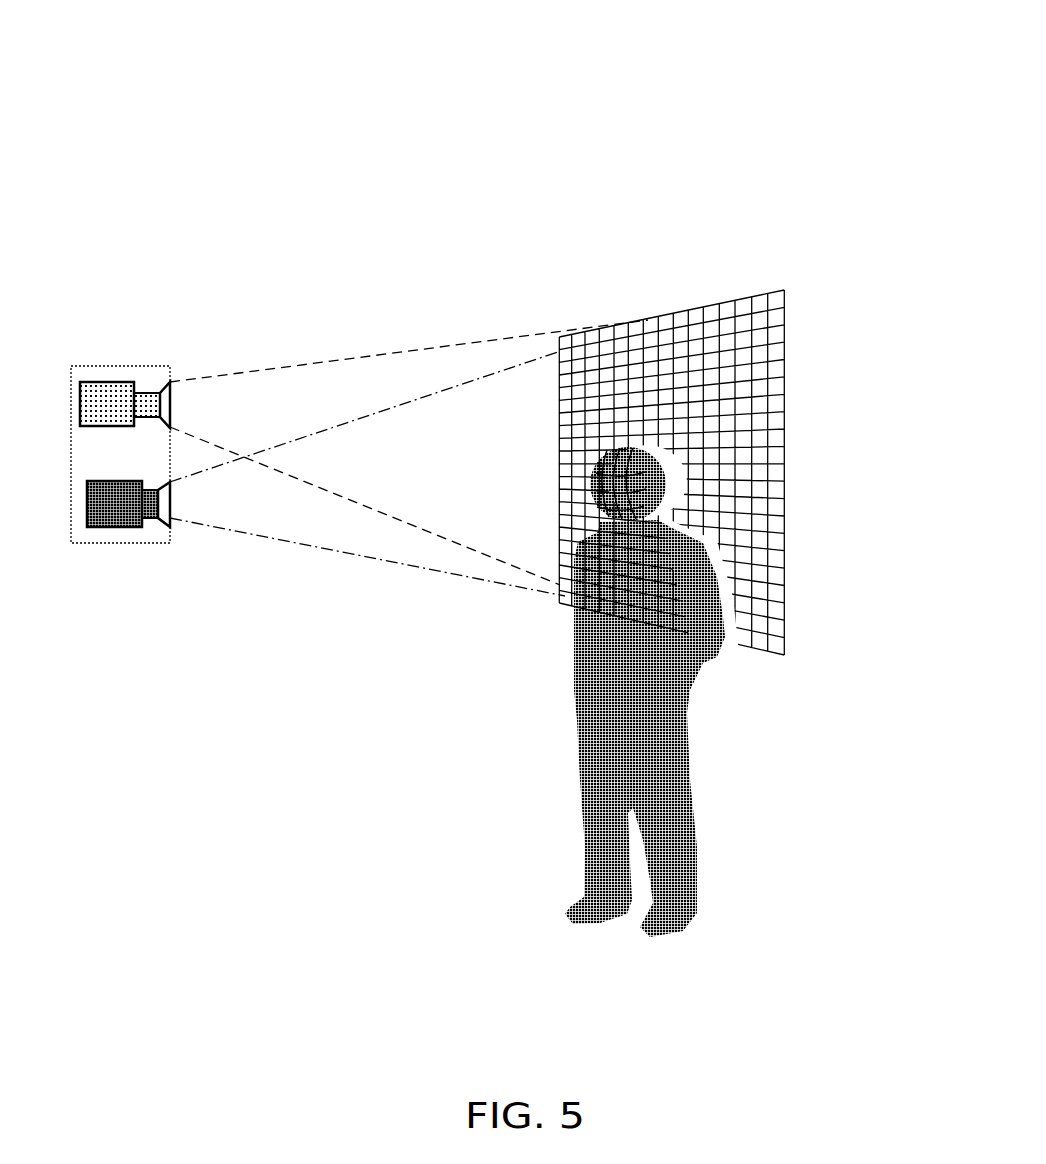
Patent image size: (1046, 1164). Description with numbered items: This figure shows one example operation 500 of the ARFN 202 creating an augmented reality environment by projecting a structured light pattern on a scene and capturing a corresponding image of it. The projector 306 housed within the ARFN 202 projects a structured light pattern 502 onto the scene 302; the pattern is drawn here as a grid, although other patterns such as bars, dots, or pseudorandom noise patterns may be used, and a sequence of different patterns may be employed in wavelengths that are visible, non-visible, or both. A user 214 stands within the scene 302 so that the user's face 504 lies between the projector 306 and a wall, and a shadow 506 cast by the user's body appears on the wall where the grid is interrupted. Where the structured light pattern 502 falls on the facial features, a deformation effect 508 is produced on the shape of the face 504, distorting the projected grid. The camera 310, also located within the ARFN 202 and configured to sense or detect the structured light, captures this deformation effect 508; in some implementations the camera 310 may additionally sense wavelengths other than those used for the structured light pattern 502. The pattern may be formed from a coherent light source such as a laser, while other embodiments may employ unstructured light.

The operation 500 is at (770, 51).
The ARFN 202 is at (96, 550).
The projector 306 is at (105, 405).
The camera 310 is at (127, 527).
The structured light pattern 502 is at (563, 356).
The scene 302 is at (800, 652).
The face 504 is at (627, 447).
The shadow 506 is at (679, 466).
The deformation effect 508 is at (613, 528).
The user 214 is at (703, 652).